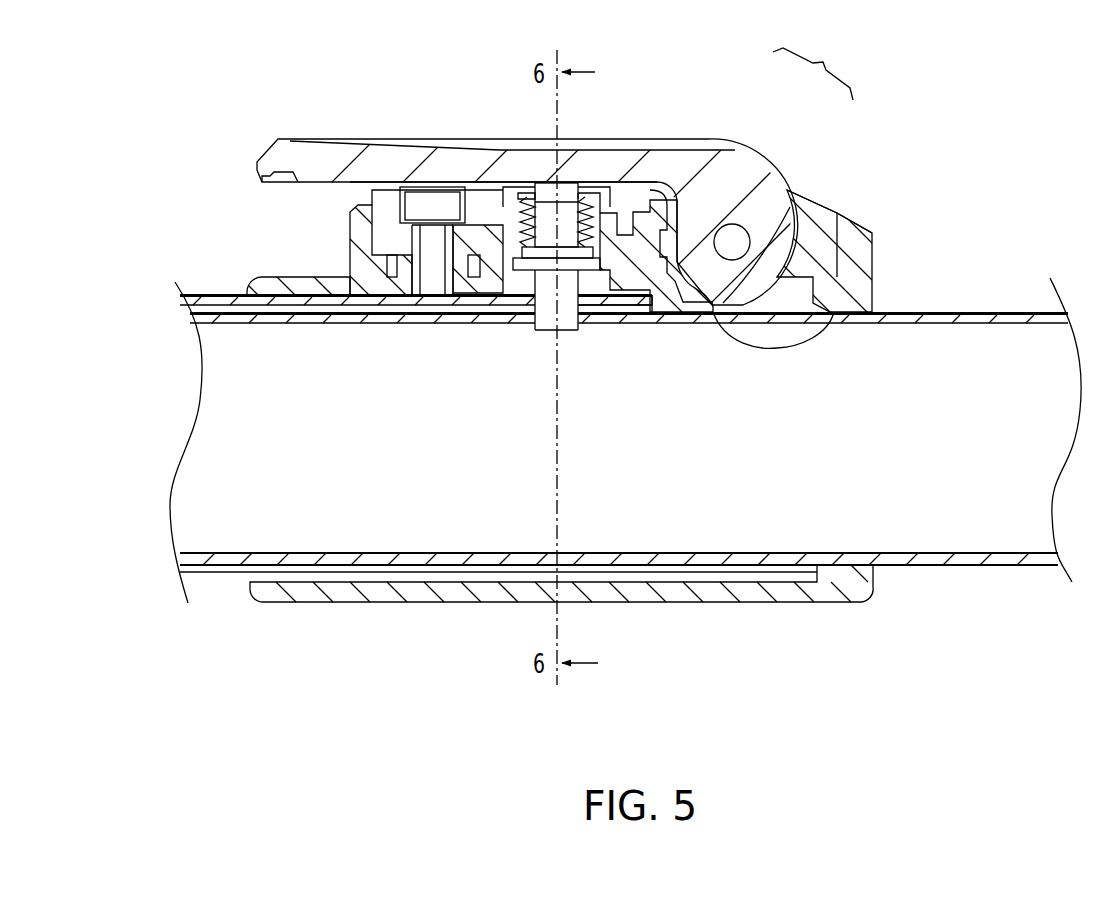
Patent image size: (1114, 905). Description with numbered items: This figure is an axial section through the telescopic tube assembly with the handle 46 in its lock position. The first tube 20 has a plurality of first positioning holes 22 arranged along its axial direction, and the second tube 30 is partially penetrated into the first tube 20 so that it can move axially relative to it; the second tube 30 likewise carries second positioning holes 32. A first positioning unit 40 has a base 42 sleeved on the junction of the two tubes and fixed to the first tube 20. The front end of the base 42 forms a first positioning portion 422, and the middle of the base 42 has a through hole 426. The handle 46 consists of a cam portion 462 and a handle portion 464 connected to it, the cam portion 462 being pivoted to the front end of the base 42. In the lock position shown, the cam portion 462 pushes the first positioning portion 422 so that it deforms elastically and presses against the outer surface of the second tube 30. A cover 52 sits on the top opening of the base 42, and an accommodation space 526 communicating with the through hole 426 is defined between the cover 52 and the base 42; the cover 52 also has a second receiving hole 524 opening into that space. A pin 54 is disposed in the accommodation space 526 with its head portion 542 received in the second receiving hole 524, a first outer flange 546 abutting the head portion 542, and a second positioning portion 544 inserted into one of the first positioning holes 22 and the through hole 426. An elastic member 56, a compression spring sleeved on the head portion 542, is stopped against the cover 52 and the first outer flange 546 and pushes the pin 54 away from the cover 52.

The first tube 20 is at (192, 297).
The first positioning holes 22 is at (590, 308).
The second tube 30 is at (1001, 312).
The second positioning holes 32 is at (580, 314).
The first positioning unit 40 is at (813, 66).
The base 42 is at (823, 223).
The first positioning portion 422 is at (816, 343).
The through hole 426 is at (533, 275).
The handle 46 is at (541, 165).
The cam portion 462 is at (787, 190).
The handle portion 464 is at (438, 146).
The cover 52 is at (480, 188).
The second receiving hole 524 is at (548, 185).
The accommodation space 526 is at (603, 213).
The pin 54 is at (514, 332).
The head portion 542 is at (566, 248).
The second positioning portion 544 is at (545, 328).
The first outer flange 546 is at (585, 233).
The elastic member 56 is at (503, 190).